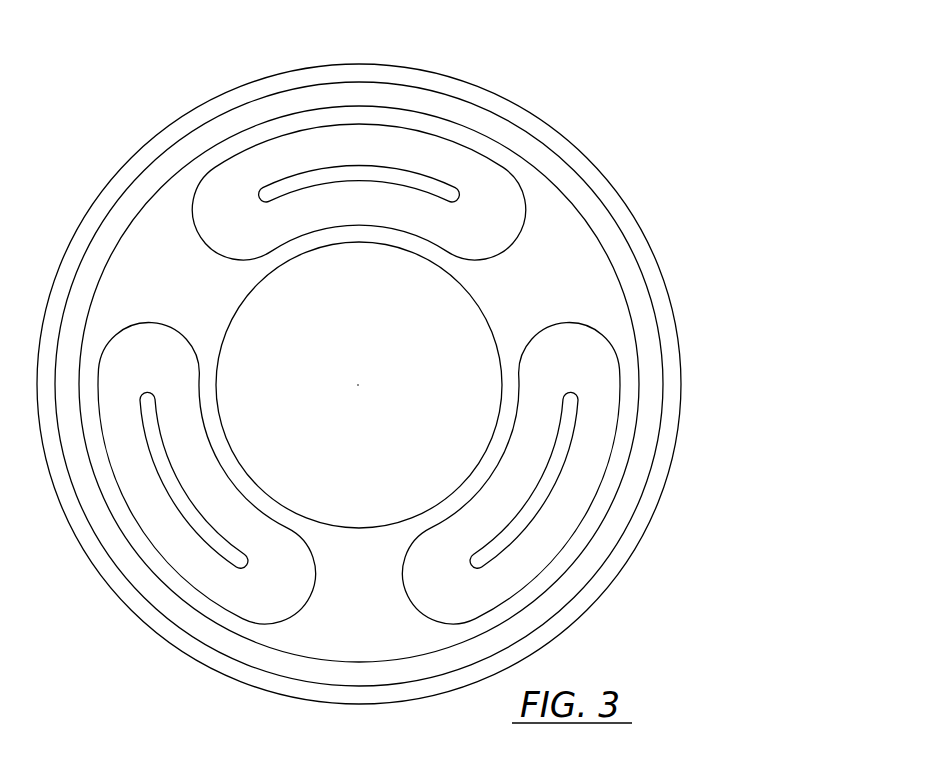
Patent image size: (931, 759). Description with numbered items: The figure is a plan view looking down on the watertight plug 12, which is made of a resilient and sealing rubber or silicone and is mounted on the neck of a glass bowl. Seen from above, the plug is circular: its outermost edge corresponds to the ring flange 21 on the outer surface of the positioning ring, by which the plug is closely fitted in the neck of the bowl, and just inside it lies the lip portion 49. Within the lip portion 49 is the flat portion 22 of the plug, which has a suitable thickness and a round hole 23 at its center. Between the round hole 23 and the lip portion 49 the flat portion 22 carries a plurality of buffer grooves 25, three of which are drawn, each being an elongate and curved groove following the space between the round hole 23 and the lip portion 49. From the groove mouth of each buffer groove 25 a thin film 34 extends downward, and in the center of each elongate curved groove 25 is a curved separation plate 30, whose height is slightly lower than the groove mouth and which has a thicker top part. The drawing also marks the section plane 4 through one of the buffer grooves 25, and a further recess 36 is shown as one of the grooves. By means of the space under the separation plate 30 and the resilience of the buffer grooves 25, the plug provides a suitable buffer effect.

The watertight plug 12 is at (634, 180).
The ring flange 21 is at (650, 265).
The flat portion 22 is at (568, 272).
The round hole 23 is at (439, 338).
The buffer groove 25 is at (346, 140).
The separation plate 30 is at (510, 533).
The thin film 34 is at (590, 485).
The arcuate recess 36 is at (207, 473).
The lip portion 49 is at (538, 153).
The section line 4- 4 is at (447, 433).